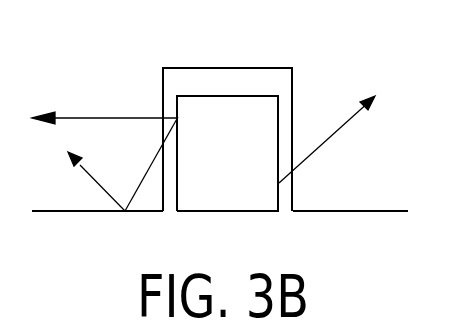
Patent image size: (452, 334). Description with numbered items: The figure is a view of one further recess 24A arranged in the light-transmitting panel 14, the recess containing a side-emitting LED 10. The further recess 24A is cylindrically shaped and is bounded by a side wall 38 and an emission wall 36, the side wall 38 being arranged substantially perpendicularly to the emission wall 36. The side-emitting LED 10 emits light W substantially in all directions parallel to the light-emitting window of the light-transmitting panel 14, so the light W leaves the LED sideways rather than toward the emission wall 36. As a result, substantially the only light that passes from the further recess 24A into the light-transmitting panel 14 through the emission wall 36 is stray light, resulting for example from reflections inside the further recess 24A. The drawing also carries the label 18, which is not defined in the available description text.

The side-emitting LED 10 is at (258, 110).
The light-transmitting panel 14 is at (60, 199).
The surface 18 is at (366, 211).
The further recess 24A is at (270, 80).
The emission wall 36 is at (191, 74).
The side wall 38 is at (163, 86).
The light W is at (82, 112).